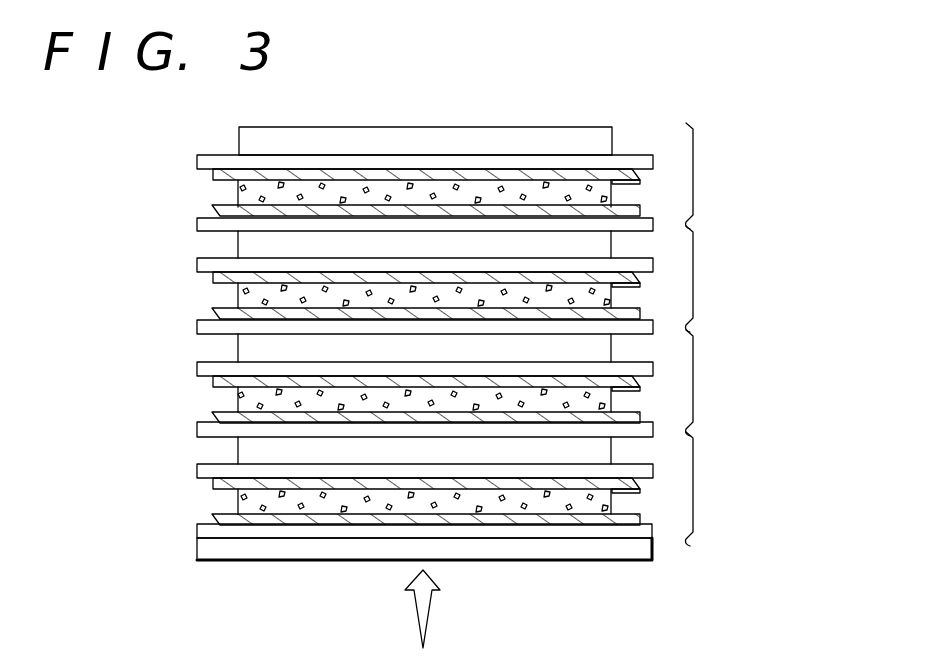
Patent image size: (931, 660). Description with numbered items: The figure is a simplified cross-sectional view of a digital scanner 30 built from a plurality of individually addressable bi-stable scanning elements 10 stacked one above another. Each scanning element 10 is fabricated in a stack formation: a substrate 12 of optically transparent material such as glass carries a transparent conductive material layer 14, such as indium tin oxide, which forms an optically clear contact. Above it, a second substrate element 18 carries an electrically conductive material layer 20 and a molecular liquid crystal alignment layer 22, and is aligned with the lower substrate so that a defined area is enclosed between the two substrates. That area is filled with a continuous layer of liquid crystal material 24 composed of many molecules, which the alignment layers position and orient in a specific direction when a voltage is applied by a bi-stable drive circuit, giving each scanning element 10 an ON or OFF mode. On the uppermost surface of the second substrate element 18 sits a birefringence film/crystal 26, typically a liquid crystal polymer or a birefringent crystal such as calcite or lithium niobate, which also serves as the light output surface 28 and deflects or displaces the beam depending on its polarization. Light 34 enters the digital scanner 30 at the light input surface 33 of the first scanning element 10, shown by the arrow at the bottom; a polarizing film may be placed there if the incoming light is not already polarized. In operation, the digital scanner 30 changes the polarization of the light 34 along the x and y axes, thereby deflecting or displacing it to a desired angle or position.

The bi-stable scanning element 10 is at (706, 334).
The substrate 12 is at (205, 325).
The transparent conductive material layer 14 is at (212, 208).
The second substrate element 18 is at (203, 265).
The electrically conductive material layer 20 is at (640, 181).
The molecular liquid crystal alignment layer 22 is at (743, 443).
The liquid crystal material 24 is at (248, 197).
The birefringence film/crystal 26 is at (455, 138).
The light output surface 28 is at (325, 127).
The digital scanner 30 is at (837, 478).
The light input surface 33 is at (628, 552).
The light 34 is at (432, 603).